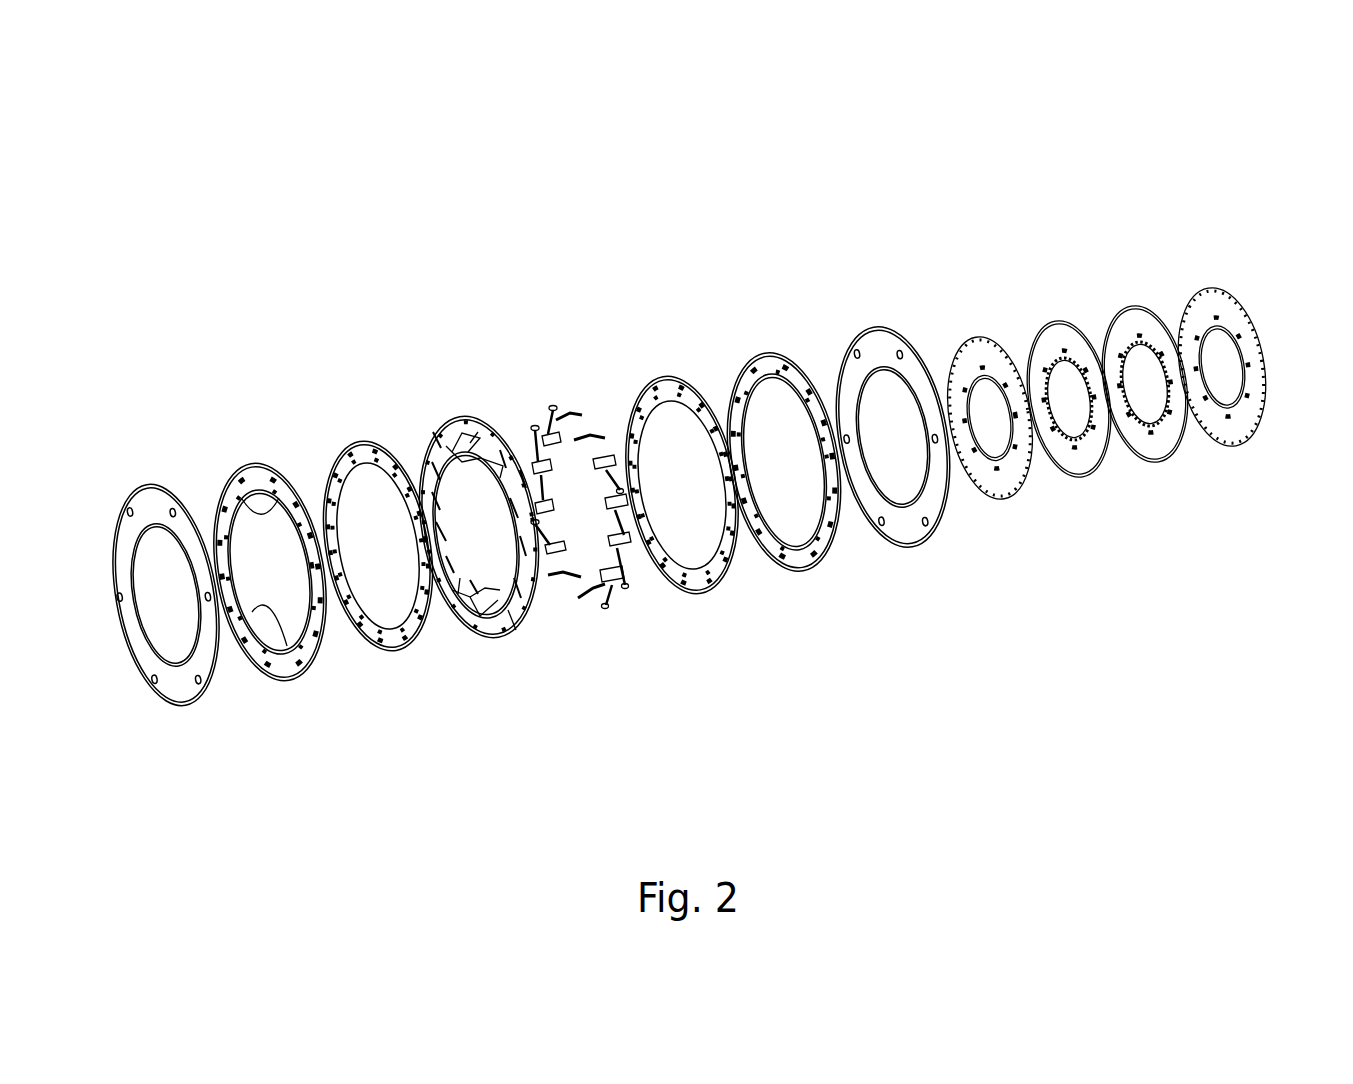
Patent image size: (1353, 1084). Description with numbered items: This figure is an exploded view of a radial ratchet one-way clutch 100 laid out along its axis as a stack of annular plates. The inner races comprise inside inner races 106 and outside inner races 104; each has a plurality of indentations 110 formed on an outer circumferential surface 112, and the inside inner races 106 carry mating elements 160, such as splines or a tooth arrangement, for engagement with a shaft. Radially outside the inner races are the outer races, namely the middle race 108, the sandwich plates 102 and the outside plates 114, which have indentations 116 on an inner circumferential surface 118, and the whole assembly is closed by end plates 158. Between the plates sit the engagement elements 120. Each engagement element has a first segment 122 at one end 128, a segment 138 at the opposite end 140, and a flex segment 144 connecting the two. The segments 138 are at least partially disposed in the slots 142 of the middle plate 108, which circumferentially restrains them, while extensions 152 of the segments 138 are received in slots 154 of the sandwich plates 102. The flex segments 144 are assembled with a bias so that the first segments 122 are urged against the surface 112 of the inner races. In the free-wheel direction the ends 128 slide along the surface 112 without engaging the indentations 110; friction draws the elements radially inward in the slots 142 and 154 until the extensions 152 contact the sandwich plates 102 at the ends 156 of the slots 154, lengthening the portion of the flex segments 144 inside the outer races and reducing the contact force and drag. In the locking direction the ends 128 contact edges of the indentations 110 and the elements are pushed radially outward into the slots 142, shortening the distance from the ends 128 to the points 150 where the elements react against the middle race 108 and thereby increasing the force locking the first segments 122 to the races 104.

The one-way clutch 100 is at (795, 150).
The sandwich plate 102 is at (365, 655).
The outside inner race 104 is at (1119, 352).
The inside inner race 106 is at (1128, 305).
The middle race 108 is at (509, 477).
The indentation 110 is at (1240, 303).
The outer circumferential surface 112 is at (1260, 360).
The outside plate 114 is at (222, 468).
The indentation 116 is at (244, 498).
The inner circumferential surface 118 is at (287, 646).
The engagement element 120 is at (539, 318).
The first segment 122 is at (513, 462).
The end 128 is at (596, 420).
The segment 138 is at (566, 398).
The end 140 is at (550, 400).
The slot 142 is at (494, 628).
The flex segment 144 is at (535, 465).
The point 150 is at (516, 628).
The extension 152 is at (603, 607).
The slot 154 is at (382, 452).
The end 156 is at (392, 452).
The end plate 158 is at (141, 484).
The mating element 160 is at (1066, 414).